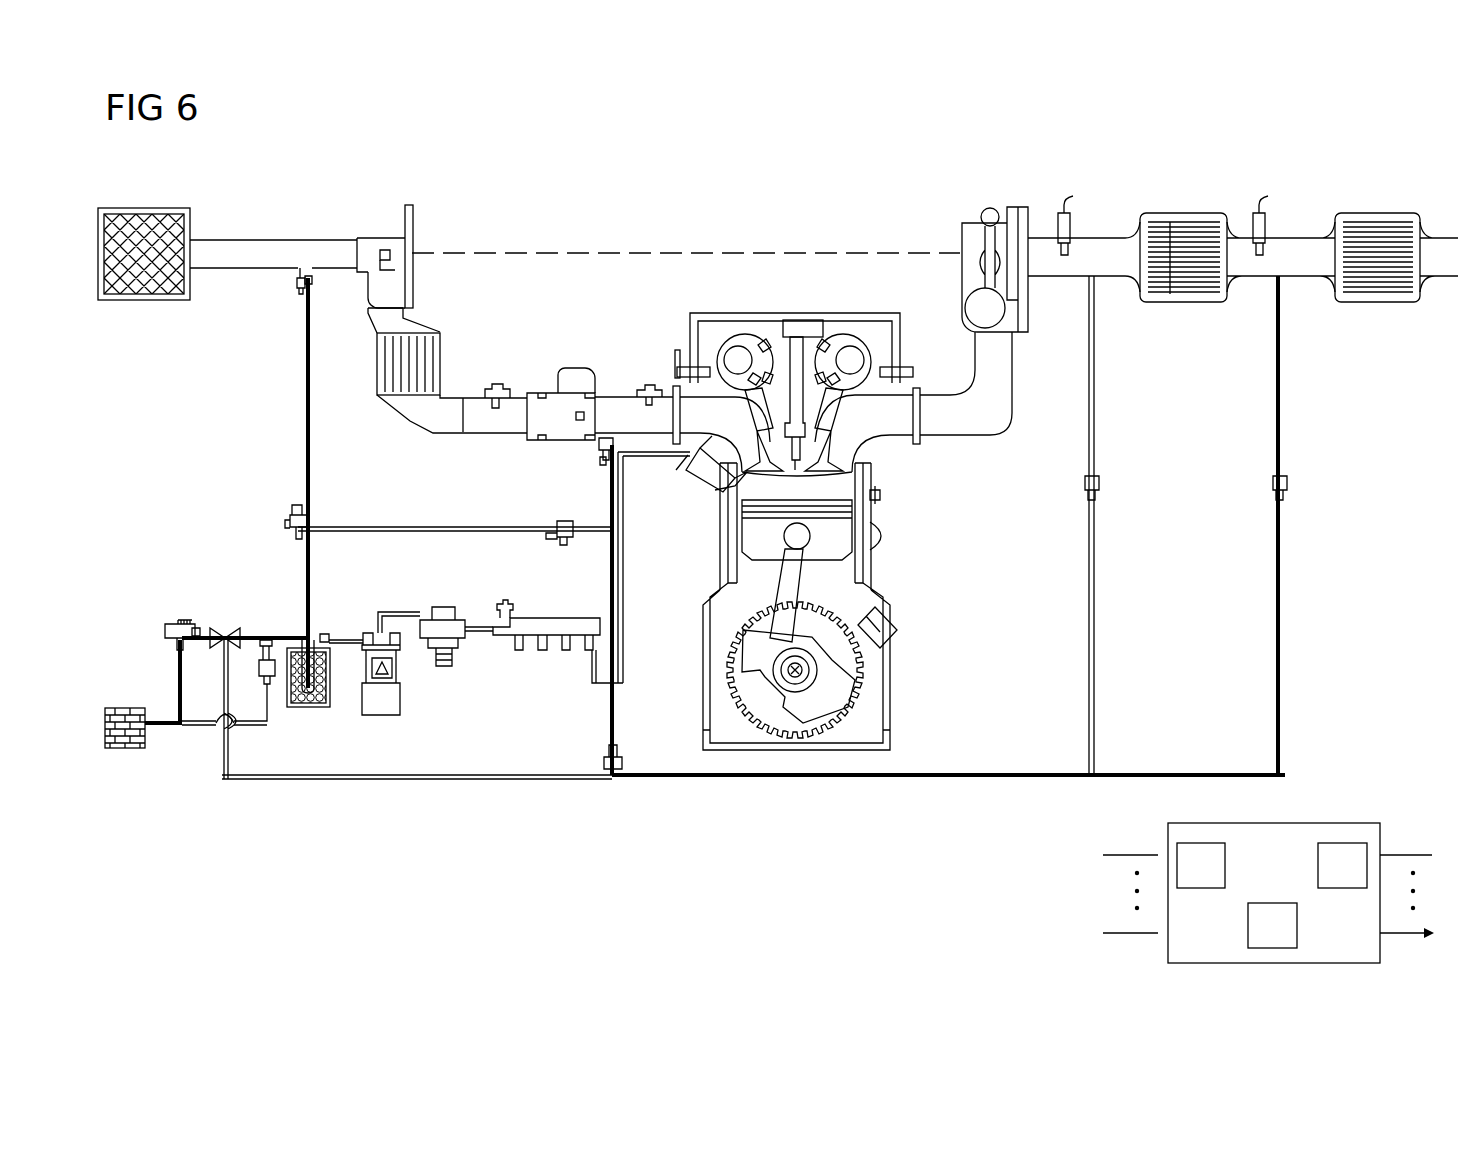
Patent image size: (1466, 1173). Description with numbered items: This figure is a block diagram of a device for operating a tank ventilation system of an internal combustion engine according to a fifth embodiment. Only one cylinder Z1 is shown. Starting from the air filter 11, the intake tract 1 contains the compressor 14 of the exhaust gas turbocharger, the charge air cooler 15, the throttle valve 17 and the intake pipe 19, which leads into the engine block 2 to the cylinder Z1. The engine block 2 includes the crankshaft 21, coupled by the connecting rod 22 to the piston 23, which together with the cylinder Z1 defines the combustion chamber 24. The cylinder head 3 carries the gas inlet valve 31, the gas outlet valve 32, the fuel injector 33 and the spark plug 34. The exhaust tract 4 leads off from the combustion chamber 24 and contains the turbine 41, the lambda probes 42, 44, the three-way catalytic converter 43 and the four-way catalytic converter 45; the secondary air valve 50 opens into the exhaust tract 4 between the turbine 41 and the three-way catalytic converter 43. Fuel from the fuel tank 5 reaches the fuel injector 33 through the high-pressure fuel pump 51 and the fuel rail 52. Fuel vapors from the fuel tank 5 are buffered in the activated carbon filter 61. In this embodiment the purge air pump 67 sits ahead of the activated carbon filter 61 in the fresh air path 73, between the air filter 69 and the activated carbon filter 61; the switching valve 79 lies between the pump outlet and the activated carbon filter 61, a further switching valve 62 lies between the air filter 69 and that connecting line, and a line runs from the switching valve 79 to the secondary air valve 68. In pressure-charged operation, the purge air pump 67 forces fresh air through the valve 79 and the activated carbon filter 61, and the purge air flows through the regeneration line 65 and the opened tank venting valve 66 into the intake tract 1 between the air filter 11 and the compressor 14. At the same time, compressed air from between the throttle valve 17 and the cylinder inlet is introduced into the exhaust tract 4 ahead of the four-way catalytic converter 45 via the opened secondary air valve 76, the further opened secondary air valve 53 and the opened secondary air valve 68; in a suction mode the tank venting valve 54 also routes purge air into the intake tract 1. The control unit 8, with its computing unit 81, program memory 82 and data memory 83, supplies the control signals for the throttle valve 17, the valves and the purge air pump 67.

The intake tract 1 is at (284, 226).
The engine block 2 is at (946, 650).
The cylinder head 3 is at (748, 276).
The exhaust tract 4 is at (1067, 306).
The fuel tank 5 is at (380, 715).
The control unit 8 is at (1378, 823).
The air filter 11 is at (182, 208).
The compressor 14 is at (398, 205).
The charge air cooler 15 is at (442, 330).
The throttle valve 17 is at (573, 368).
The intake pipe 19 is at (494, 385).
The crankshaft 21 is at (860, 697).
The connecting rod 22 is at (740, 613).
The piston 23 is at (742, 530).
The combustion chamber 24 is at (848, 486).
The gas inlet valve 31 is at (730, 334).
The gas outlet valve 32 is at (856, 334).
The fuel injector 33 is at (693, 487).
The spark plug 34 is at (792, 320).
The turbine 41 is at (976, 207).
The lambda probe 42 is at (1069, 200).
The three-way catalytic converter 43 is at (1175, 213).
The lambda probe 44 is at (1264, 200).
The four-way catalytic converter 45 is at (1370, 213).
The secondary air valve 50 is at (1085, 486).
The high-pressure fuel pump 51 is at (445, 607).
The fuel rail 52 is at (518, 618).
The secondary air valve 53 is at (604, 762).
The tank venting valve 54 is at (565, 520).
The activated carbon filter 61 is at (307, 707).
The switching valve 62 is at (267, 640).
The regeneration line 65 is at (306, 396).
The tank venting valve 66 is at (296, 284).
The purge air pump 67 is at (180, 620).
The secondary air valve 68 is at (1273, 486).
The air filter 69 is at (130, 748).
The fresh air path 73 is at (182, 675).
The tank venting valve 76 is at (614, 446).
The switching valve 79 is at (228, 628).
The computing unit 81 is at (1270, 903).
The program memory 82 is at (1193, 843).
The data memory 83 is at (1340, 843).
The cylinder Z1 is at (893, 606).